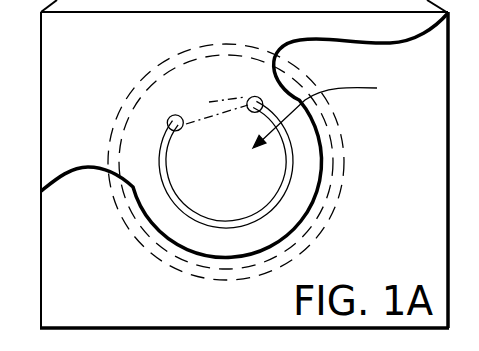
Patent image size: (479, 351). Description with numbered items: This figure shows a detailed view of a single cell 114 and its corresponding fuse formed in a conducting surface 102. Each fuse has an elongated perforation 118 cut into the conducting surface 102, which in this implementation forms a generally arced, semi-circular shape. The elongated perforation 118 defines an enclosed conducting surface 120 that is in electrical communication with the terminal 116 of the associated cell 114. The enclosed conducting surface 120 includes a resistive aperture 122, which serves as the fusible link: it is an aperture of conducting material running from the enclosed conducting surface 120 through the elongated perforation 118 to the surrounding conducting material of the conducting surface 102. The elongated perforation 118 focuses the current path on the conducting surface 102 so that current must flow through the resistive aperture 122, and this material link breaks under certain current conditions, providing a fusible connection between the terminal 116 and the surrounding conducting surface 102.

The conducting surface 102 is at (50, 183).
The cell 114 is at (335, 125).
The terminal 116 is at (327, 178).
The elongated perforation 118 is at (157, 140).
The enclosed conducting surface 120 is at (331, 115).
The resistive aperture 122 is at (209, 102).